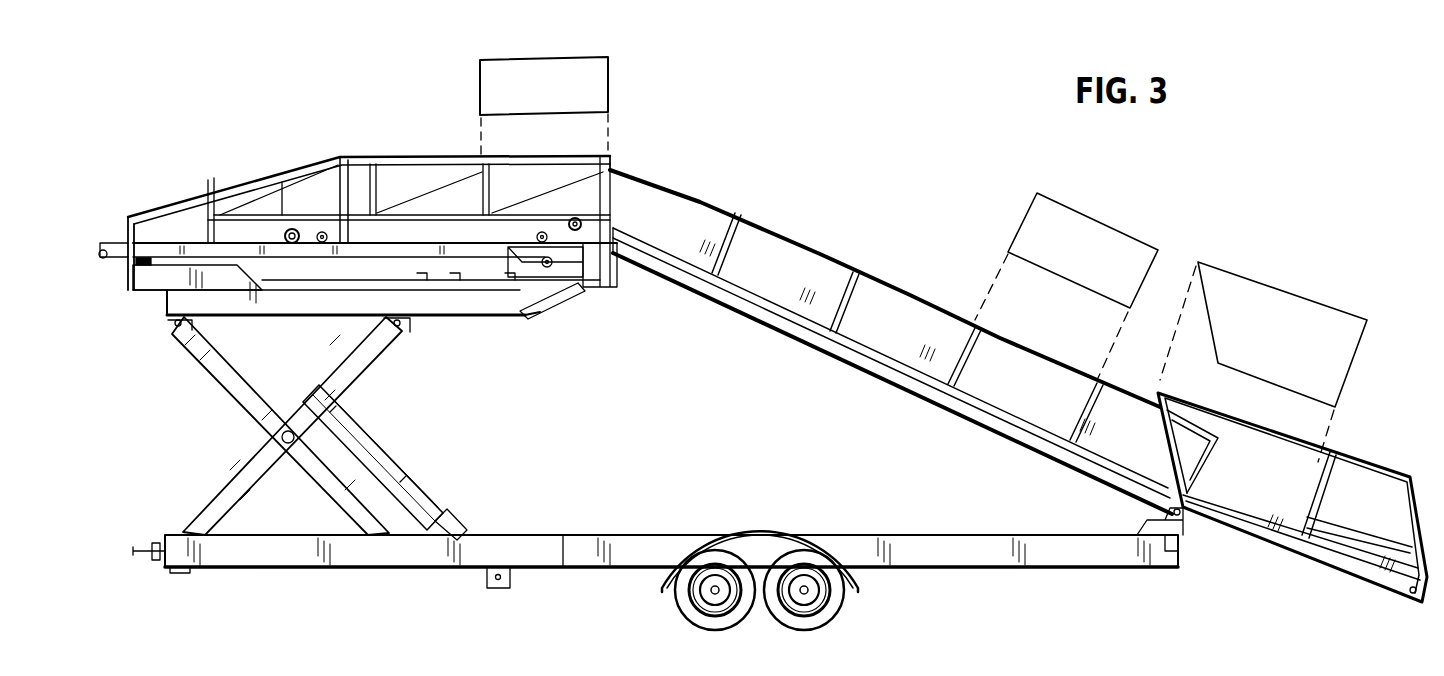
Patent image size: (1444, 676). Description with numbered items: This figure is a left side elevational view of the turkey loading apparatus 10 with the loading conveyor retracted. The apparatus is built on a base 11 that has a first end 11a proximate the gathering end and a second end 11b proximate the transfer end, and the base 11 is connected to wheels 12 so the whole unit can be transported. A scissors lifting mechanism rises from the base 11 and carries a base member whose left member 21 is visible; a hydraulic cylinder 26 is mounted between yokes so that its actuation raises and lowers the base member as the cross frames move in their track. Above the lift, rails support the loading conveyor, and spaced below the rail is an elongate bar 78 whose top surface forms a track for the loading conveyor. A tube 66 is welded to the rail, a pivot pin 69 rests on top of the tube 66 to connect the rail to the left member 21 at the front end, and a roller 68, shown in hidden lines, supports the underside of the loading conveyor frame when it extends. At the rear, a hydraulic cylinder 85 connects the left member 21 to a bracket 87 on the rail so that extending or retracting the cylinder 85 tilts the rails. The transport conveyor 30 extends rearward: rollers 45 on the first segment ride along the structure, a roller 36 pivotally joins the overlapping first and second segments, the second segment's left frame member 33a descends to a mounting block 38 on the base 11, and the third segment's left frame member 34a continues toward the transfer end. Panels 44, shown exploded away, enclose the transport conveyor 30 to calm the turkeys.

The turkey loading apparatus 10 is at (889, 160).
The base 11 is at (617, 563).
The first end 11a is at (978, 563).
The second end 11b is at (312, 563).
The wheels 12 is at (833, 613).
The left member 21 is at (235, 308).
The hydraulic cylinder 26 is at (410, 463).
The transport conveyor 30 is at (1151, 352).
The left frame member 33a is at (905, 388).
The left frame member 34a is at (1320, 553).
The roller 36 is at (585, 223).
The mounting block 38 is at (1180, 517).
The panels 44 is at (551, 64).
The rollers 45 is at (318, 245).
The tube 66 is at (158, 287).
The roller 68 is at (150, 268).
The pivot pin 69 is at (140, 257).
The elongate bar 78 is at (378, 273).
The hydraulic cylinder 85 is at (553, 303).
The bracket 87 is at (597, 287).